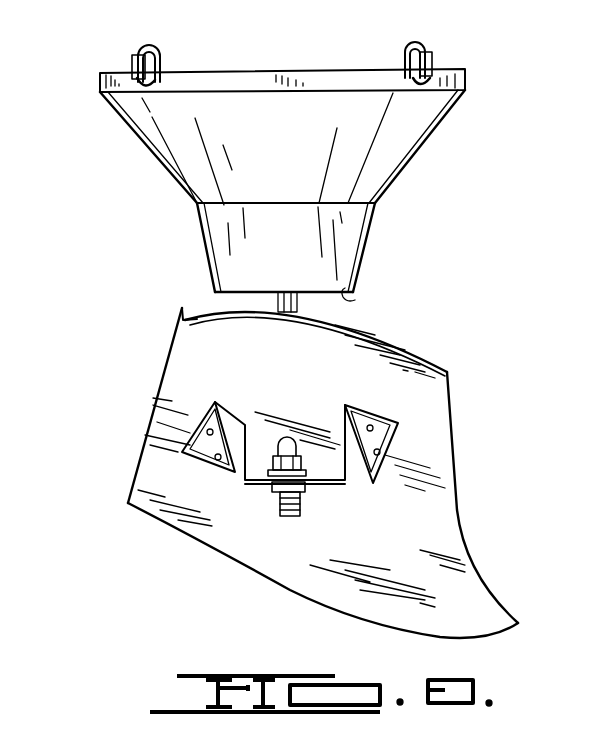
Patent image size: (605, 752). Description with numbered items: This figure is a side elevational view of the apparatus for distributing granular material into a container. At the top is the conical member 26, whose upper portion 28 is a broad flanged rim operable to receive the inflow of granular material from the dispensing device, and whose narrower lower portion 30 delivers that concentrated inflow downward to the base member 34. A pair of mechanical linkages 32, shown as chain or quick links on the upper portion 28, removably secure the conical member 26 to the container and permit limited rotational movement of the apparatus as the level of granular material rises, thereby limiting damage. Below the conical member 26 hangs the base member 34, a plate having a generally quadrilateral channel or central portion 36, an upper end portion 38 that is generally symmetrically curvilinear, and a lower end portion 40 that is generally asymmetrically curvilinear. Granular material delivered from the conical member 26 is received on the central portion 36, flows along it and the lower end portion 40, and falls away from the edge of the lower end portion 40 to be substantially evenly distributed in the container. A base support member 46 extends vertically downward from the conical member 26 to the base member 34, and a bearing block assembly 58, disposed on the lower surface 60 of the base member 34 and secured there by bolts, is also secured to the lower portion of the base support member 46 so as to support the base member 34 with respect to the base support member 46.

The conical member 26 is at (261, 157).
The upper portion 28 is at (120, 72).
The lower portion 30 is at (356, 300).
The mechanical linkages 32 is at (158, 54).
The base member 34 is at (323, 482).
The central portion 36 is at (410, 505).
The upper end portion 38 is at (352, 345).
The lower end portion 40 is at (445, 617).
The base support member 46 is at (272, 508).
The bearing block assembly 58 is at (350, 432).
The lower surface 60 is at (413, 420).